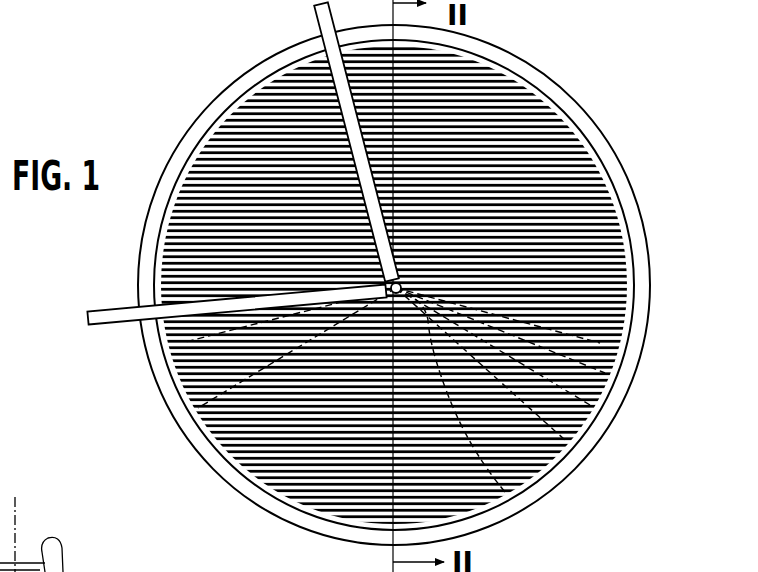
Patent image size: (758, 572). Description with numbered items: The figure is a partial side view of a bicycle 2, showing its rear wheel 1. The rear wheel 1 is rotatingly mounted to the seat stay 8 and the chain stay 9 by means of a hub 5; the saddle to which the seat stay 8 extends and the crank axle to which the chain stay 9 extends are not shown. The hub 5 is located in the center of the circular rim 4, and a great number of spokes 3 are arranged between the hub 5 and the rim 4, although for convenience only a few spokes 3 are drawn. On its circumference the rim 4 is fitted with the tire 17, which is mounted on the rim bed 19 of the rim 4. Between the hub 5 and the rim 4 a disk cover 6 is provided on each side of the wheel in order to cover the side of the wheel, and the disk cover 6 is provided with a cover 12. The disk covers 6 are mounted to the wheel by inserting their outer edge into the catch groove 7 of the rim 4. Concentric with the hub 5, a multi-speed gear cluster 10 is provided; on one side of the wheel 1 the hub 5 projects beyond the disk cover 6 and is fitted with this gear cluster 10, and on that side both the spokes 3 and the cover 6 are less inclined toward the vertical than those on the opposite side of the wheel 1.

The rear wheel 1 is at (575, 72).
The bicycle 2 is at (130, 152).
The spokes 3 is at (600, 418).
The circular rim 4 is at (608, 166).
The hub 5 is at (205, 404).
The disk cover 6 is at (487, 132).
The catch groove 7 is at (100, 571).
The seat stay 8 is at (316, 18).
The chain stay 9 is at (106, 300).
The gear cluster 10 is at (505, 492).
The cover 12 is at (533, 150).
The tire 17 is at (556, 472).
The rim bed 19 is at (32, 536).